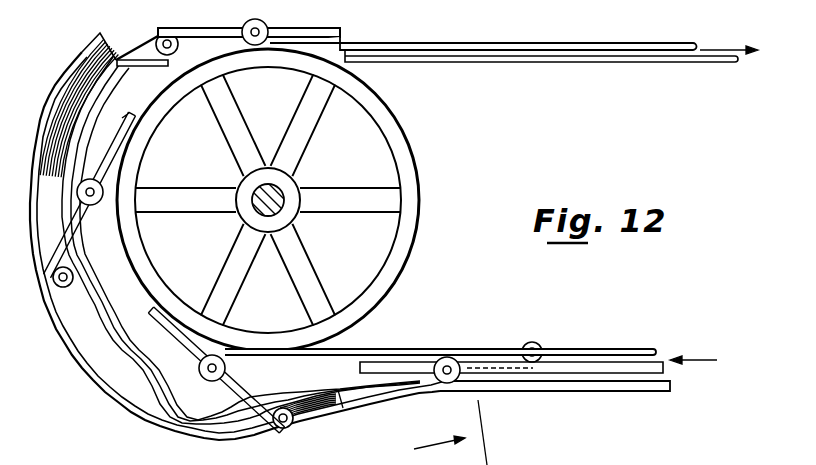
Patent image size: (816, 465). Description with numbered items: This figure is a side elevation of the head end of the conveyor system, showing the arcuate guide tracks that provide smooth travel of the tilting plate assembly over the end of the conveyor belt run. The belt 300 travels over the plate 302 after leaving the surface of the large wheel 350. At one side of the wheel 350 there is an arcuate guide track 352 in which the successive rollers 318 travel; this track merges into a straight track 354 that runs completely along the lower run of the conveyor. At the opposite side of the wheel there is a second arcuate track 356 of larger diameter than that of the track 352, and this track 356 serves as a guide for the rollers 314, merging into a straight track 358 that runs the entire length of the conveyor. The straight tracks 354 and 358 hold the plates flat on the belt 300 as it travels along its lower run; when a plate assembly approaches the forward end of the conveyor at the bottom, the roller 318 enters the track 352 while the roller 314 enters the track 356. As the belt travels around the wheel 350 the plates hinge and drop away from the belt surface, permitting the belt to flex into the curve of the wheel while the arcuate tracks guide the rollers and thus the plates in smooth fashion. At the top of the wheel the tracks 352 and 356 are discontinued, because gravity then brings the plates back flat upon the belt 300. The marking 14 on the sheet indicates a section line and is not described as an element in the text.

The large wheel 350 is at (418, 198).
The second arcuate track 356 is at (86, 48).
The arcuate guide track 352 is at (106, 287).
The belt 300 is at (547, 46).
The plate 302 is at (698, 62).
The straight track 358 is at (658, 376).
The straight track 354 is at (638, 395).
The rollers 318 is at (92, 205).
The rollers 314 is at (62, 288).
The section line for FIG. 14 is at (433, 432).